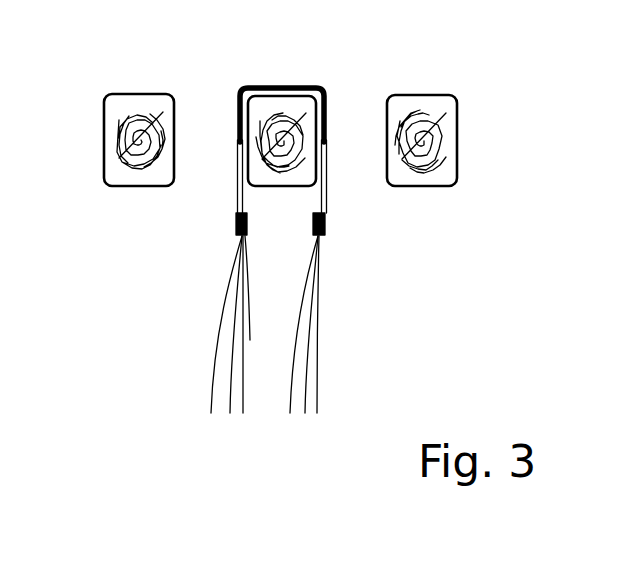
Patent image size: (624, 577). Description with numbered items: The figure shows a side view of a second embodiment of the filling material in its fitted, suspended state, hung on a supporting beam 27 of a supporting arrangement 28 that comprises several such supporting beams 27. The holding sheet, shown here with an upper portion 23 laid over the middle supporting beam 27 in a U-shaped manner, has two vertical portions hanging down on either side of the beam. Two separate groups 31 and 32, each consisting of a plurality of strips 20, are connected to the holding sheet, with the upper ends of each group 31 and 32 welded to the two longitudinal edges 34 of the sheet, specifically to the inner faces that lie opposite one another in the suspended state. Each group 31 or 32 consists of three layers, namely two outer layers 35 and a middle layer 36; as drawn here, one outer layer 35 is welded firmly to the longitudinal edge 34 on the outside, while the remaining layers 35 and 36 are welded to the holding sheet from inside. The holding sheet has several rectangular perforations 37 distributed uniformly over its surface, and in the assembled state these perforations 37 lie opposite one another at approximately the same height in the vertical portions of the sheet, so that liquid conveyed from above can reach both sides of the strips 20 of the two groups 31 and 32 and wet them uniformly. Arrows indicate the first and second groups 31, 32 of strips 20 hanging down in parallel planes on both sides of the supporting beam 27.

The strips 20 is at (245, 391).
The frame 23 is at (290, 84).
The supporting beam 27 is at (133, 100).
The supporting arrangement 28 is at (88, 137).
The first group of strips 31 is at (226, 440).
The second group of strips 32 is at (305, 445).
The longitudinal edges of the holding sheet 34 is at (236, 221).
The outer layers 35 is at (228, 279).
The middle layer 36 is at (232, 307).
The perforations 37 is at (323, 163).